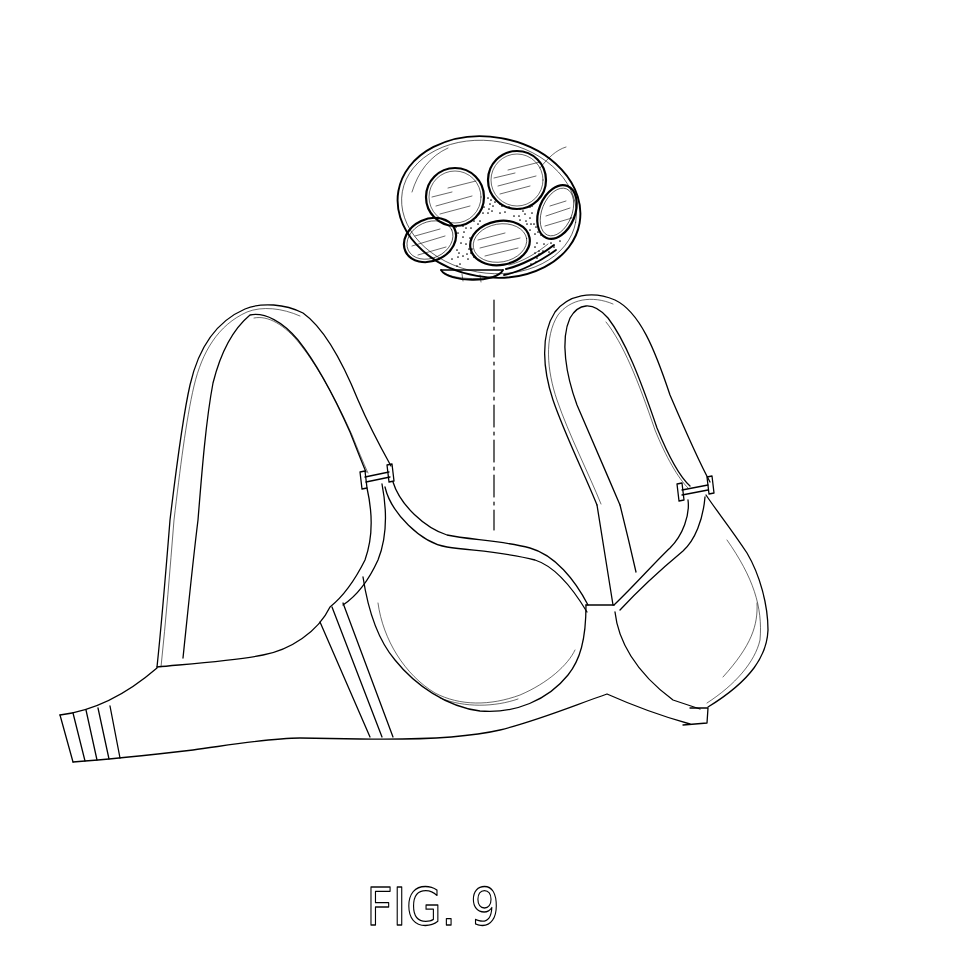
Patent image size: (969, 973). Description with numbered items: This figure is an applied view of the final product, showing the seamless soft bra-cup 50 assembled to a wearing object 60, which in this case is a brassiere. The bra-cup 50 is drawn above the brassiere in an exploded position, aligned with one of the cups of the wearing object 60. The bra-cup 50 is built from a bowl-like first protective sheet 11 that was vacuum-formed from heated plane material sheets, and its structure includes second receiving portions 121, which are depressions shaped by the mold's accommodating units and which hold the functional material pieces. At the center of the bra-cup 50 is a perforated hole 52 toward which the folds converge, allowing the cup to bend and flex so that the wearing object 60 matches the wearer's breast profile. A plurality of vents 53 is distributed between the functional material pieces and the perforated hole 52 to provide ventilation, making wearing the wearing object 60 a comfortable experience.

The seamless soft bra-cup 50 is at (522, 133).
The first protective sheet 11 is at (558, 168).
The vents 53 is at (540, 213).
The perforated hole 52 is at (523, 257).
The second receiving portions 121 is at (418, 235).
The wearing object 60 is at (738, 536).